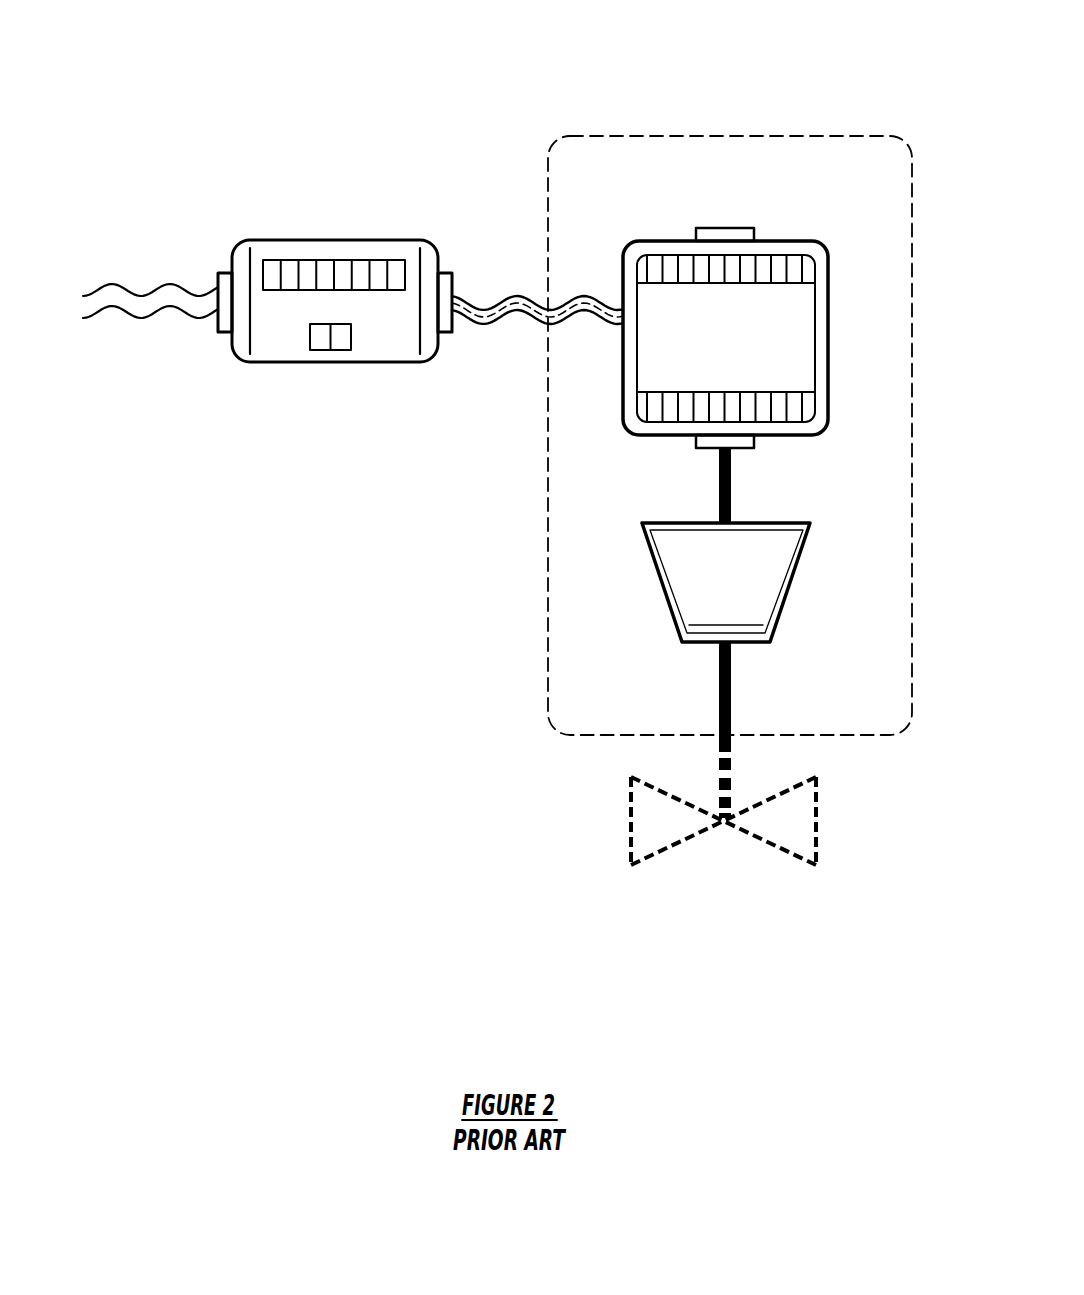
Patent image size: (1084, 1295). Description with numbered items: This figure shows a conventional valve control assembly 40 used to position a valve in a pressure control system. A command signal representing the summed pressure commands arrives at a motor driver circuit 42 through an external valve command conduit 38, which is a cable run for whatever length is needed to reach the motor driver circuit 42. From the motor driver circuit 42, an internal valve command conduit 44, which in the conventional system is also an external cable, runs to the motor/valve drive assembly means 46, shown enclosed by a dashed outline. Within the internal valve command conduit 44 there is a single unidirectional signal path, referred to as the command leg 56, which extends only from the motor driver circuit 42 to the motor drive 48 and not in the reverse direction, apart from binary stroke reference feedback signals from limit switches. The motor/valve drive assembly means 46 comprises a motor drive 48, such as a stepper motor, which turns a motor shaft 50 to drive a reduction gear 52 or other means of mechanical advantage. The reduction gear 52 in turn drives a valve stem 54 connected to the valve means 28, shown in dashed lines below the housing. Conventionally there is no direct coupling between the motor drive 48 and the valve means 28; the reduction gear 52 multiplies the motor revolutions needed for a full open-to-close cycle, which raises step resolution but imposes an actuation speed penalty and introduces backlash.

The valve means 28 is at (790, 856).
The external valve command conduit 38 is at (139, 293).
The valve control assembly 40 is at (748, 87).
The motor driver circuit 42 is at (327, 240).
The internal valve command conduit 44 is at (497, 302).
The motor/valve drive assembly means 46 is at (908, 727).
The motor drive 48 is at (725, 228).
The motor shaft 50 is at (718, 468).
The reduction gear 52 is at (658, 574).
The valve stem 54 is at (715, 737).
The command leg 56 is at (480, 312).